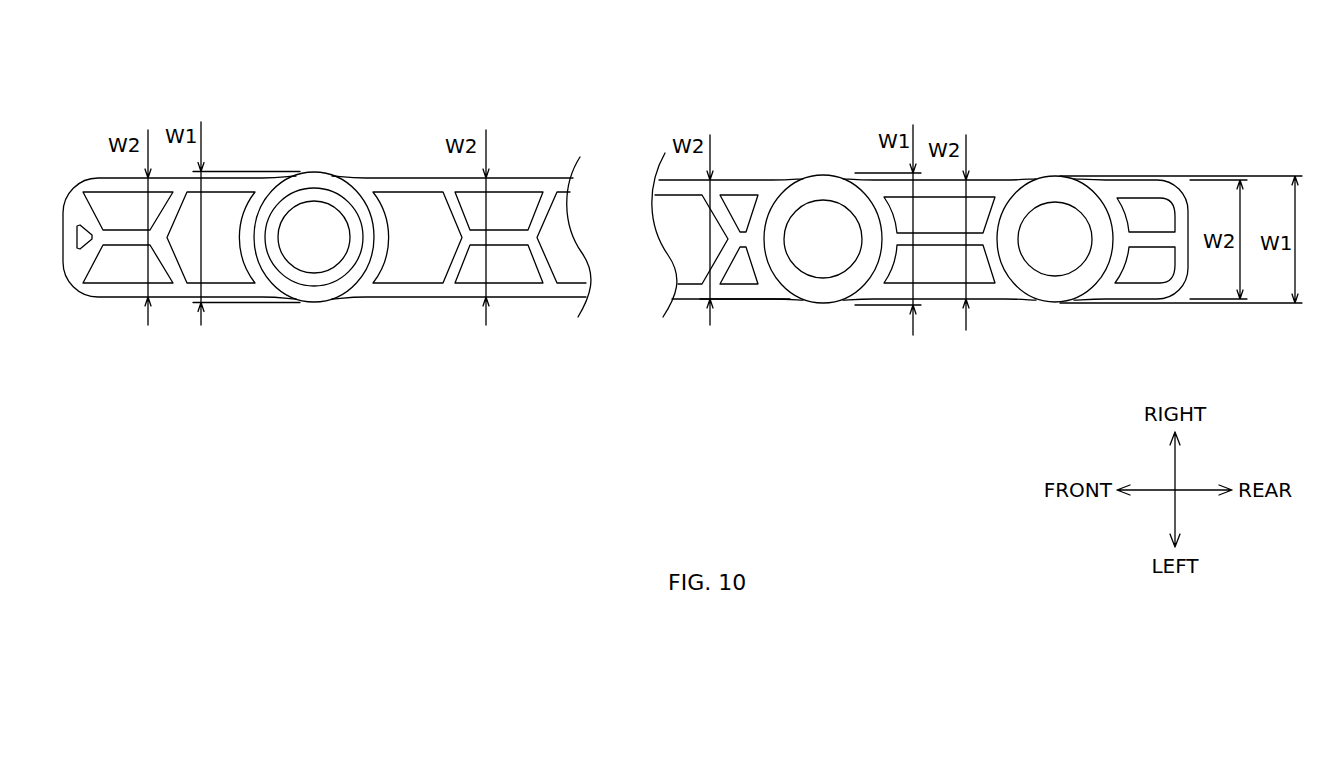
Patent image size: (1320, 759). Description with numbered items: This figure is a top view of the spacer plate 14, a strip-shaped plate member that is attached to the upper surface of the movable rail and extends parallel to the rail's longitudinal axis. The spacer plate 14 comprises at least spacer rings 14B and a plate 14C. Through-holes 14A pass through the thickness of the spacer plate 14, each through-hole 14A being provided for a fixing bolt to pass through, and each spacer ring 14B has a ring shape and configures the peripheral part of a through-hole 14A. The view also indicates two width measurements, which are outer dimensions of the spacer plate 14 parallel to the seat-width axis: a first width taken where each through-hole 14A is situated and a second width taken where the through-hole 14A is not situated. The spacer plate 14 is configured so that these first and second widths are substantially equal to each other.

The spacer plate 14 is at (761, 121).
The through-hole 14A is at (327, 252).
The spacer ring 14B is at (325, 192).
The plate 14C is at (410, 297).